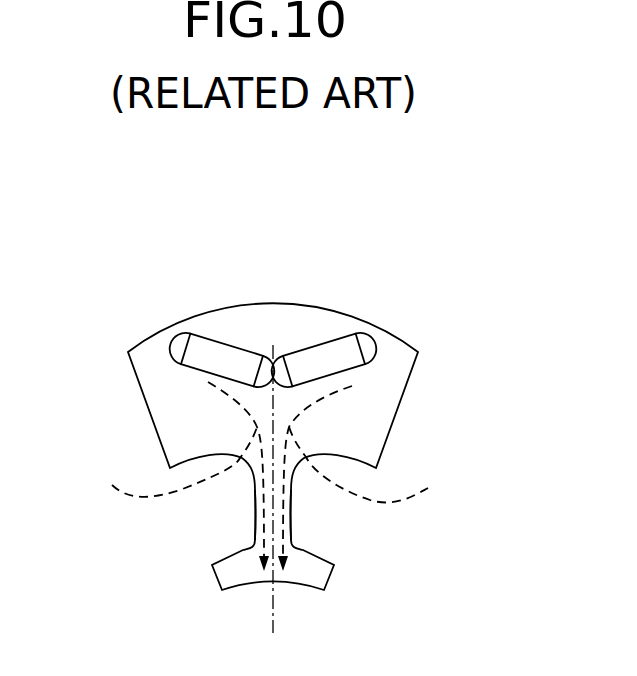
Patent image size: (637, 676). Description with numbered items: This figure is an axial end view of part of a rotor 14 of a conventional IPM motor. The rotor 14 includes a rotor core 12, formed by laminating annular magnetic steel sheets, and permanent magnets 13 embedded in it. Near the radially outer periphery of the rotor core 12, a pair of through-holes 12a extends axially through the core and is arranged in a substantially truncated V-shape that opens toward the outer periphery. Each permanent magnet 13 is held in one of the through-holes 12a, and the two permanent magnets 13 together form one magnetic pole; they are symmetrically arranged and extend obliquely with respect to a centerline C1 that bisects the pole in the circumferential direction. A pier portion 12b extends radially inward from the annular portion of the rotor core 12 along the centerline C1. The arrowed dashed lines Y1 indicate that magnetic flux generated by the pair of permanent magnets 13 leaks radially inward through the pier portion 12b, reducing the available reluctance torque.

The rotor core 12 is at (140, 345).
The through-holes 12a is at (172, 348).
The pier portions 12b is at (291, 500).
The permanent magnets 13 is at (203, 335).
The rotor 14 is at (256, 237).
The arrowed dashed lines Y1 is at (272, 476).
The centerline C1 is at (272, 620).